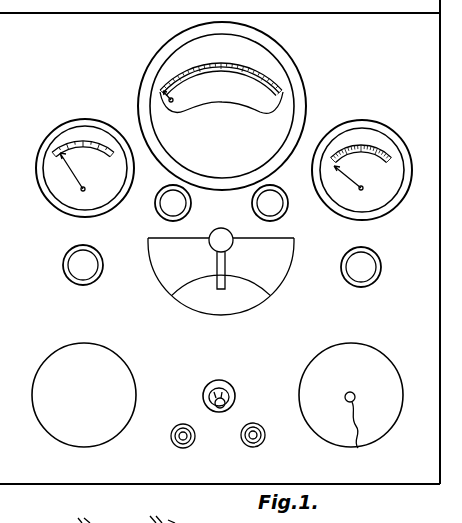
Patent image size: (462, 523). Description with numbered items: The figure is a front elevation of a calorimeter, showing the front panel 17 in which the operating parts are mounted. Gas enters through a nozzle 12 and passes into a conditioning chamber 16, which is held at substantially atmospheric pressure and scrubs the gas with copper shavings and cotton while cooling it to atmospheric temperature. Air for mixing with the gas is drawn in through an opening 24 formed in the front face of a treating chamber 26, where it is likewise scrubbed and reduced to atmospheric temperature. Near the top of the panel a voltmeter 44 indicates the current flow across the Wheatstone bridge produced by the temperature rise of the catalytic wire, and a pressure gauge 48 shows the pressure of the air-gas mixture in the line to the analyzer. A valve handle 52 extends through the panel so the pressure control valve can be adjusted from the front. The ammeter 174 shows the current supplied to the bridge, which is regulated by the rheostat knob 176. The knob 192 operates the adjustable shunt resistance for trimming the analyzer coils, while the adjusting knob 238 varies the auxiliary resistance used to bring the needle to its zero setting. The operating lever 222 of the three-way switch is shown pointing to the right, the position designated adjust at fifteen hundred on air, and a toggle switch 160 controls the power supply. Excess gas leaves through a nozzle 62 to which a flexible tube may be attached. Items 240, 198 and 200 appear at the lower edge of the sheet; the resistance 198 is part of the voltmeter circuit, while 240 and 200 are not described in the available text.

The front panel 17 is at (397, 481).
The voltmeter 44 is at (288, 110).
The pressure gauge 48 is at (46, 144).
The ammeter 174 is at (373, 126).
The knob 192 is at (191, 209).
The adjusting knob 238 is at (252, 204).
The valve handle 52 is at (75, 276).
The handle or knob 176 is at (378, 258).
The operating lever of the 3-way switch 222 is at (176, 295).
The conditioning chamber 16 is at (70, 437).
The treating chamber 26 is at (397, 376).
The opening 24 is at (365, 428).
The toggle switch 160 is at (225, 397).
The nozzle 12 is at (193, 439).
The nozzle 62 is at (264, 440).
The lead 240 is at (75, 520).
The resistance 198 is at (154, 518).
The lead 200 is at (172, 522).